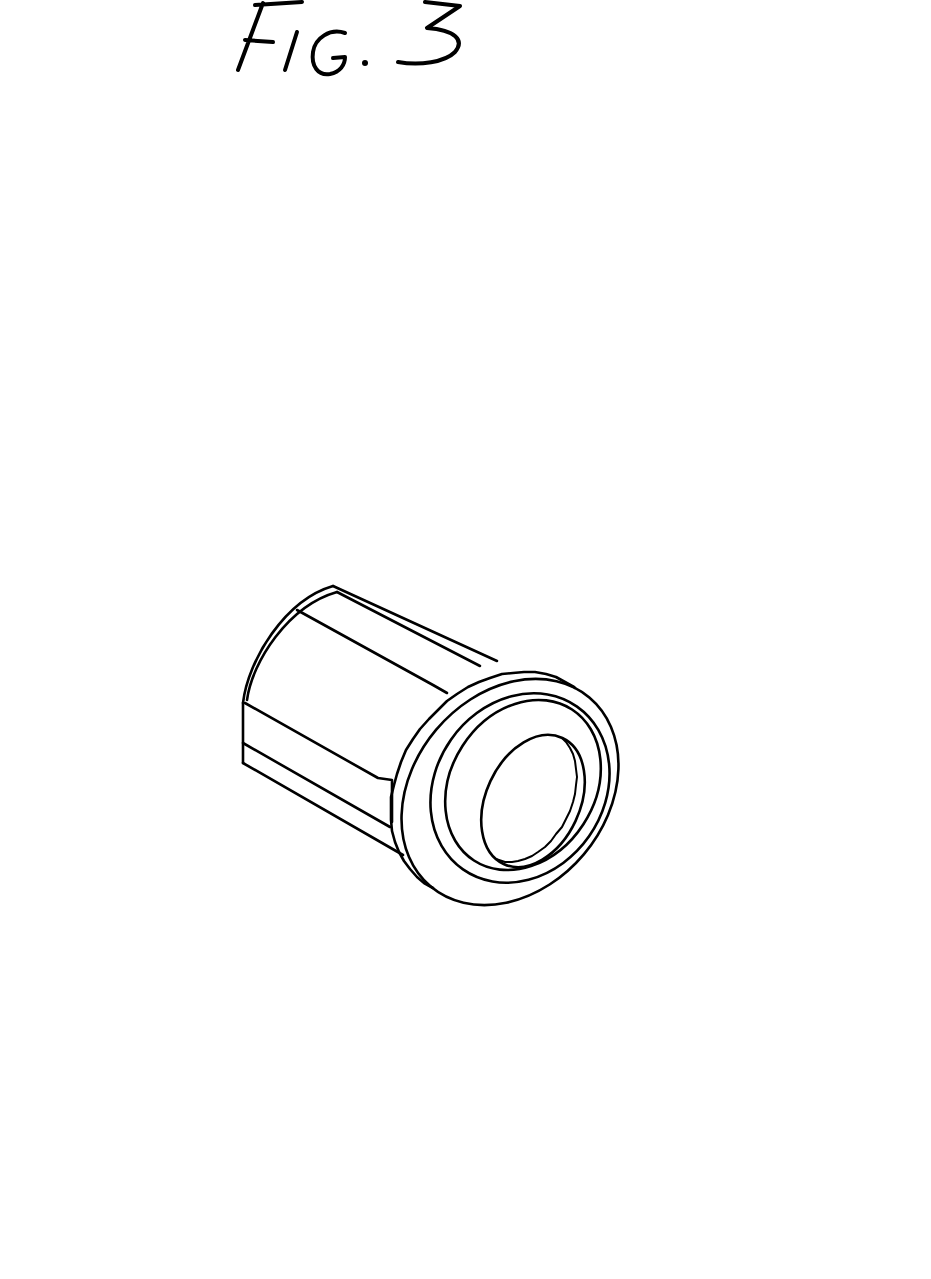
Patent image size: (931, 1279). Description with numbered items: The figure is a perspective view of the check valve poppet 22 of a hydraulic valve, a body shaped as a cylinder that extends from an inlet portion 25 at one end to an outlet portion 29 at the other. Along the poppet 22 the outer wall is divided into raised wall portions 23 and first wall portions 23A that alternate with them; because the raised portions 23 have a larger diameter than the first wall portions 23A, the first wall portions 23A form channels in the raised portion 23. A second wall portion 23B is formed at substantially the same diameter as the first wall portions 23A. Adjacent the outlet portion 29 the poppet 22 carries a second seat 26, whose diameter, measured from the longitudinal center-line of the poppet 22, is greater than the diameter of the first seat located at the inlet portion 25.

The check valve poppet 22 is at (655, 1112).
The raised wall portion 23 is at (298, 688).
The first wall portion 23A is at (410, 647).
The second wall portion 23B is at (428, 733).
The inlet portion 25 is at (230, 675).
The second seat 26 is at (490, 680).
The outlet portion 29 is at (563, 852).